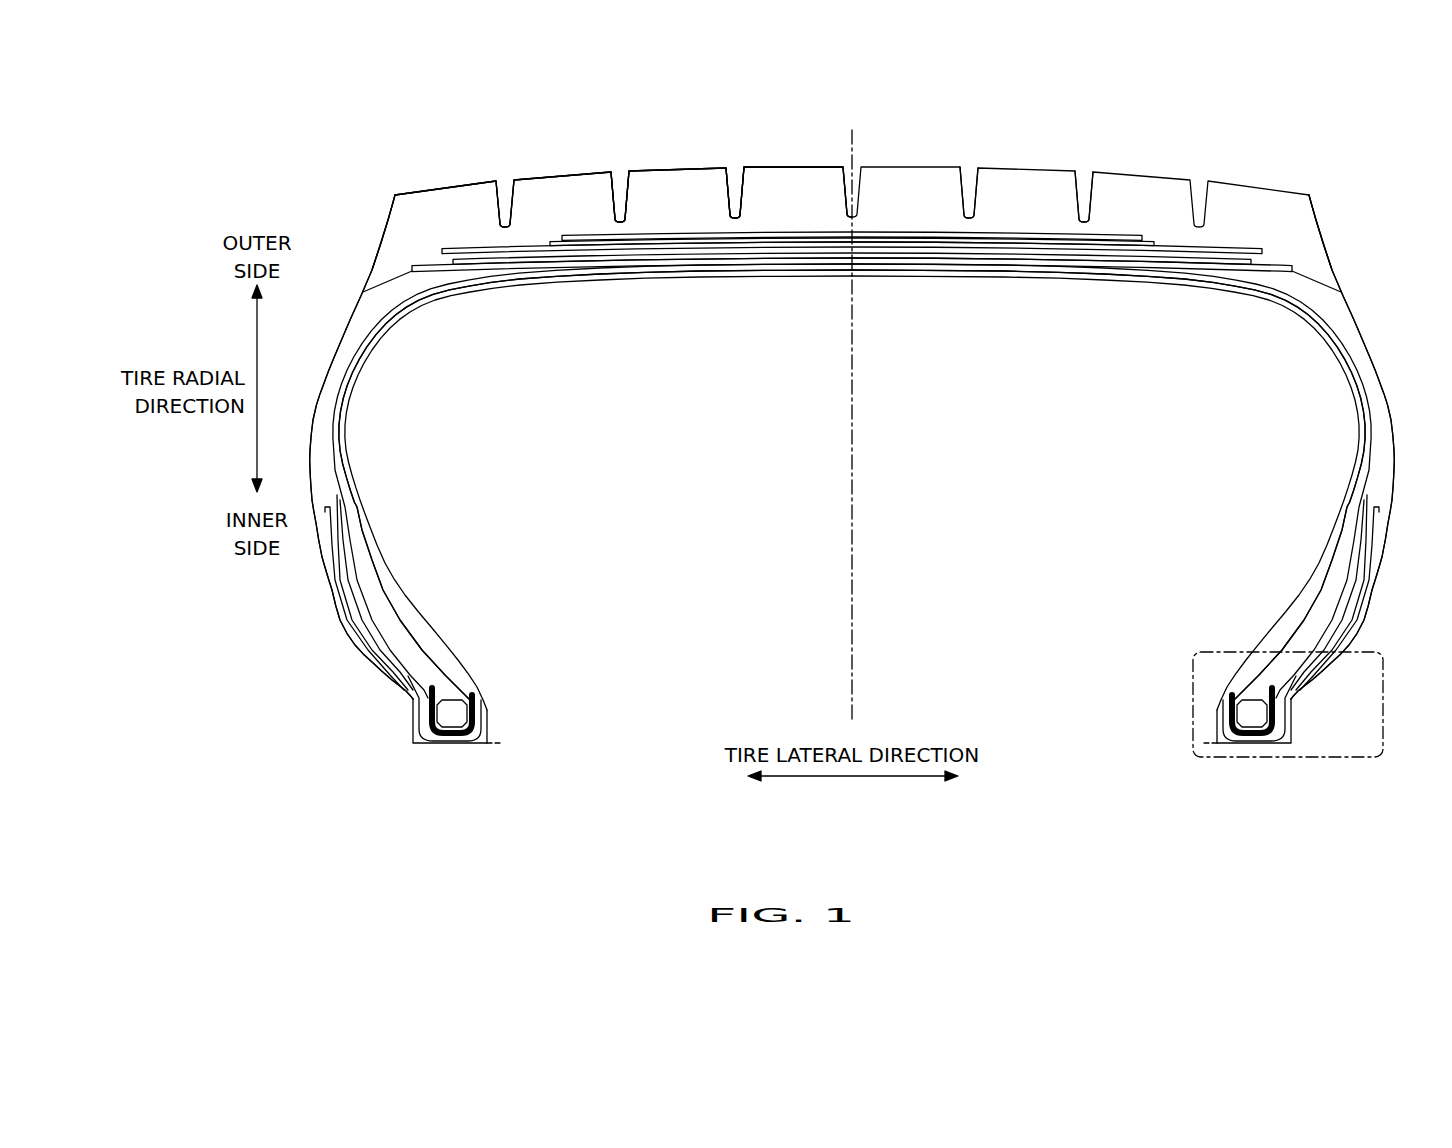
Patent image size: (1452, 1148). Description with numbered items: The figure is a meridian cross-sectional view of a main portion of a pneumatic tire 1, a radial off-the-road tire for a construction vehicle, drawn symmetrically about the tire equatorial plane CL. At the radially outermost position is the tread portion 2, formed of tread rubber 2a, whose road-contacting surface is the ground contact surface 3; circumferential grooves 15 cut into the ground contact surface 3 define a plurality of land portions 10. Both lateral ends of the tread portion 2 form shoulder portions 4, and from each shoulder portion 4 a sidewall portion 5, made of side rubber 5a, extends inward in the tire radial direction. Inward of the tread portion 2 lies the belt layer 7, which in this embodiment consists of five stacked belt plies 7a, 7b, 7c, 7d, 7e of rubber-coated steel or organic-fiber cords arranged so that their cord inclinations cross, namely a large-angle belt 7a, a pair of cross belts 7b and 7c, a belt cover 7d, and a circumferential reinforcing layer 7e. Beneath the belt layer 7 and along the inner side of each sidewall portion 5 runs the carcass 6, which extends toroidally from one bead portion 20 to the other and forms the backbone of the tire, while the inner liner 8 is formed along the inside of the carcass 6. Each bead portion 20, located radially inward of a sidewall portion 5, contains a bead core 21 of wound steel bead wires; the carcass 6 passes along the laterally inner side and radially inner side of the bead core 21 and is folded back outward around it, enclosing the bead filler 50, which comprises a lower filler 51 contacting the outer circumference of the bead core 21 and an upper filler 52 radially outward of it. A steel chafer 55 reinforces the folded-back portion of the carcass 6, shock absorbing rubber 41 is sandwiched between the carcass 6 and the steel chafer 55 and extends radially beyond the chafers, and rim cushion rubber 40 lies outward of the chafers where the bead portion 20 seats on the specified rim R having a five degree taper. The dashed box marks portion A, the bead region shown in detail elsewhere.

The pneumatic tire 1 is at (855, 448).
The tread portion 2 is at (678, 190).
The tread rubber 2a is at (558, 190).
The ground contact surface 3 is at (795, 167).
The shoulder portion 4 is at (395, 193).
The sidewall portion 5 is at (327, 367).
The side rubber 5a is at (327, 402).
The carcass 6 is at (368, 562).
The belt layer 7 is at (852, 306).
The large-angle belt 7a is at (1147, 256).
The cross belt 7b is at (1089, 255).
The cross belt 7c is at (1033, 245).
The belt cover 7d is at (1167, 330).
The circumferential reinforcing layer 7e is at (922, 250).
The inner liner 8 is at (1357, 368).
The land portion 10 is at (910, 167).
The circumferential groove 15 is at (968, 170).
The bead portion 20 is at (848, 709).
The bead core 21 is at (450, 712).
The rim cushion rubber 40 is at (417, 720).
The shock absorbing rubber 41 is at (365, 622).
The bead filler 50 is at (852, 485).
The lower filler 51 is at (418, 642).
The upper filler 52 is at (385, 615).
The steel chafer 55 is at (413, 693).
The tire equatorial plane CL is at (851, 411).
The specified rim R is at (390, 678).
The portion A is at (1275, 757).